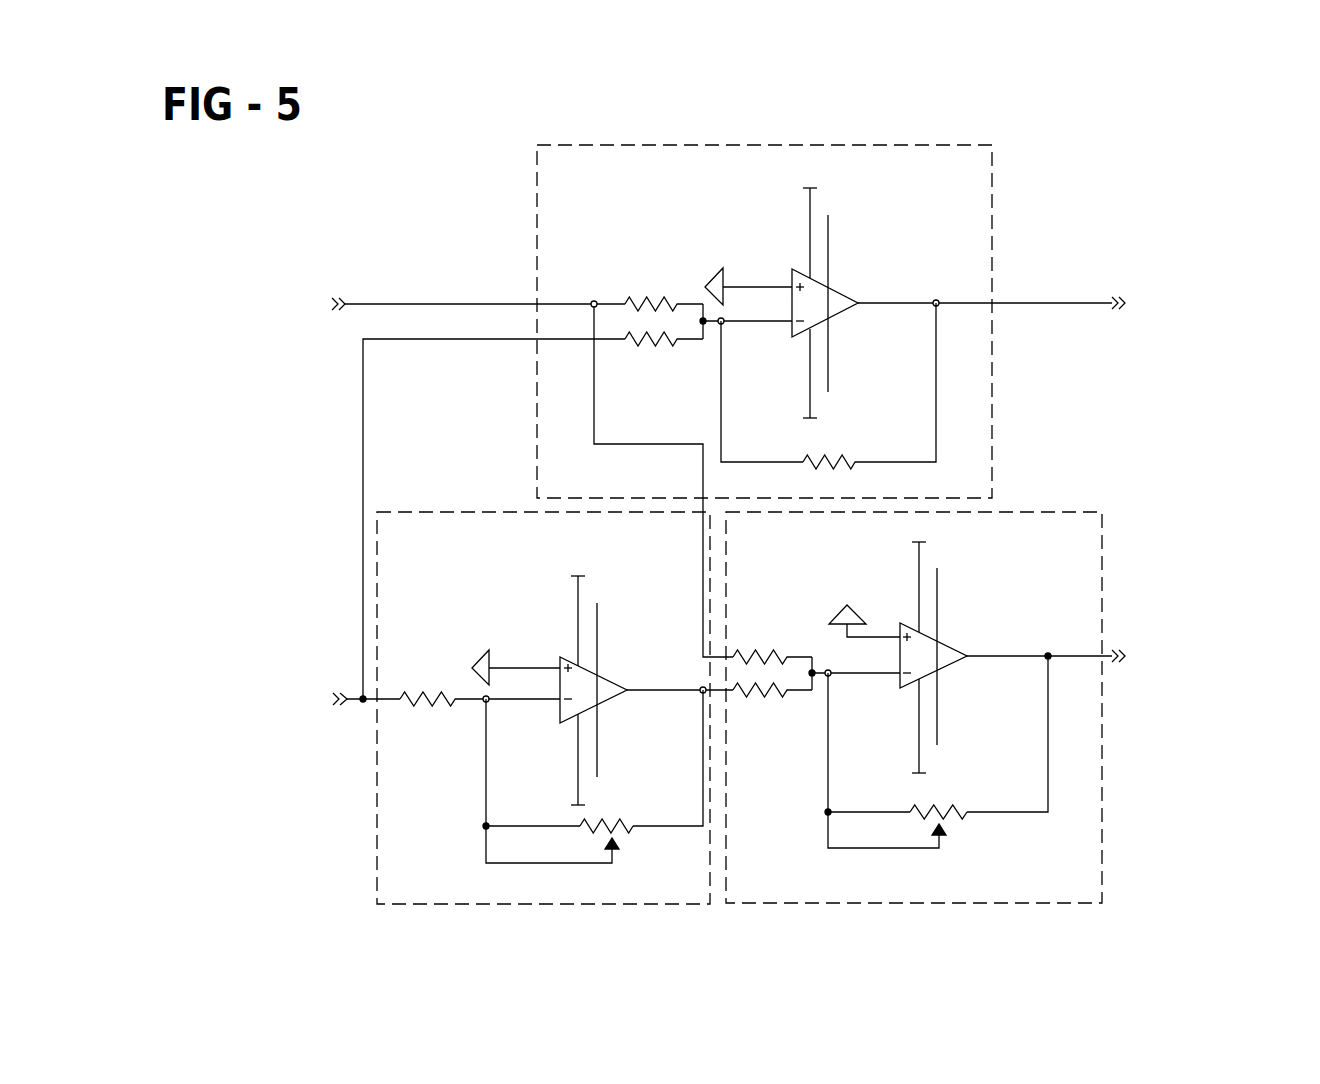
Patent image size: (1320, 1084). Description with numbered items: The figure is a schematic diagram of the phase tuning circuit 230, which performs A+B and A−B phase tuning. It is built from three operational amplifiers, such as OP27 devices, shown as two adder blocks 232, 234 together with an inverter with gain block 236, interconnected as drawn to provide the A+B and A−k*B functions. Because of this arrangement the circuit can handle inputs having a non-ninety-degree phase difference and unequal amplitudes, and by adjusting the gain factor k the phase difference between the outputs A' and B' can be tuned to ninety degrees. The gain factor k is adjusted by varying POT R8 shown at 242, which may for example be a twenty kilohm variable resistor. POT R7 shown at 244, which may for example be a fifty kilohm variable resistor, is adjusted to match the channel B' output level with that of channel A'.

The phase tuning circuit 230 is at (1297, 428).
The adder block 232 is at (537, 192).
The adder block 234 is at (1103, 778).
The inverter with gain block 236 is at (377, 852).
The POT R8 242 is at (633, 832).
The POT R7 244 is at (972, 815).